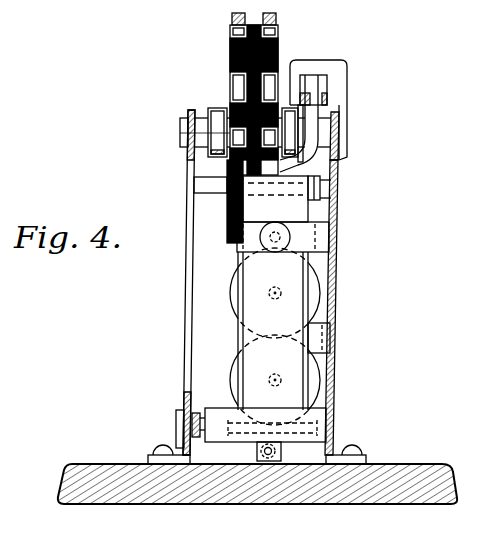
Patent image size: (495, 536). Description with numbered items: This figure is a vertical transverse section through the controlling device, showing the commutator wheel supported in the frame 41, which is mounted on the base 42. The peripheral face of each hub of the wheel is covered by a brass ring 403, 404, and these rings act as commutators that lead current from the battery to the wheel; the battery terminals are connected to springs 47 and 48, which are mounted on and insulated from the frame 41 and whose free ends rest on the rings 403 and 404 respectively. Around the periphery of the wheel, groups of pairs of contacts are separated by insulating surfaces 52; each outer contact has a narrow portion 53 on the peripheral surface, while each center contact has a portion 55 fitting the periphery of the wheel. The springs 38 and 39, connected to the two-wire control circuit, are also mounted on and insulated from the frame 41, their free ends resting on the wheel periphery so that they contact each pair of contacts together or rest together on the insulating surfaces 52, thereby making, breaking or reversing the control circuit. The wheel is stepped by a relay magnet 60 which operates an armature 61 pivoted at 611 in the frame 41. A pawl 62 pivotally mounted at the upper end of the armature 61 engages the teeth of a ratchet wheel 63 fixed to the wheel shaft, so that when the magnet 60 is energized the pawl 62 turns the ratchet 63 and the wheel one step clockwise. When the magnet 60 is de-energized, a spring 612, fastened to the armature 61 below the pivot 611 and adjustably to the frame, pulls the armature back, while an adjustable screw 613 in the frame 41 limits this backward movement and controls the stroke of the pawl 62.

The spring 38 is at (276, 19).
The spring 39 is at (232, 20).
The insulating surfaces 52 is at (280, 54).
The narrow portion 53 is at (234, 42).
The brass ring 404 is at (218, 108).
The portion 55 is at (180, 133).
The spring 47 is at (208, 158).
The pawl 62 is at (323, 90).
The brass ring 403 is at (323, 101).
The spring 48 is at (338, 140).
The ratchet wheel 63 is at (320, 165).
The armature 61 is at (308, 213).
The adjustable screw 613 is at (291, 237).
The frame 41 is at (376, 277).
The relay magnet 60 is at (238, 316).
The pivot 611 is at (298, 420).
The spring 612 is at (268, 461).
The base 42 is at (367, 493).